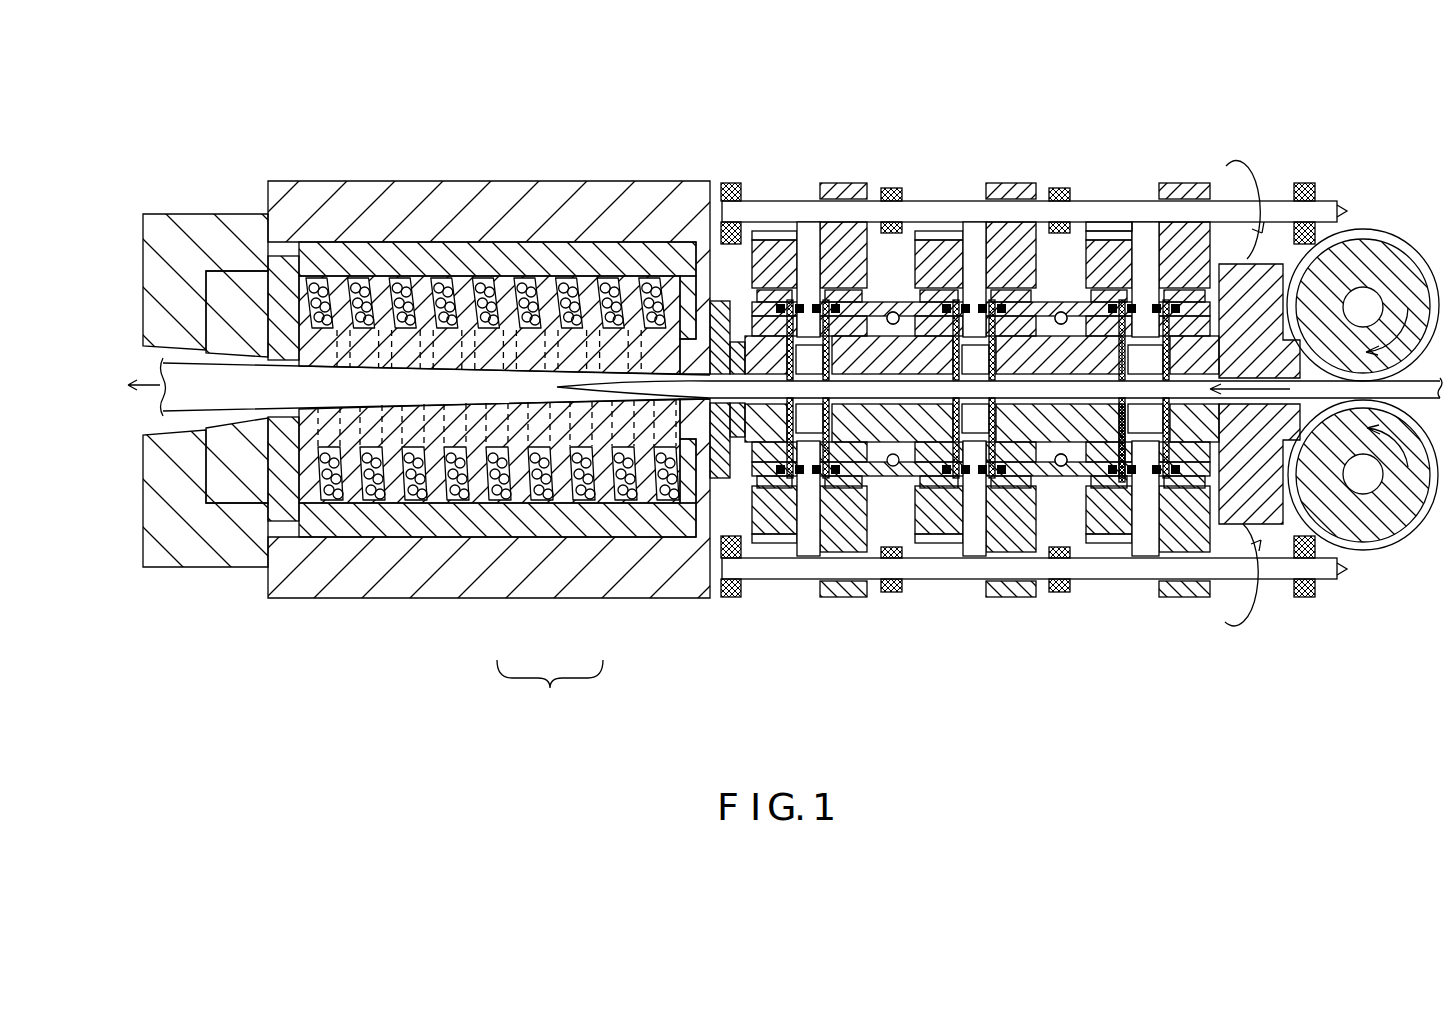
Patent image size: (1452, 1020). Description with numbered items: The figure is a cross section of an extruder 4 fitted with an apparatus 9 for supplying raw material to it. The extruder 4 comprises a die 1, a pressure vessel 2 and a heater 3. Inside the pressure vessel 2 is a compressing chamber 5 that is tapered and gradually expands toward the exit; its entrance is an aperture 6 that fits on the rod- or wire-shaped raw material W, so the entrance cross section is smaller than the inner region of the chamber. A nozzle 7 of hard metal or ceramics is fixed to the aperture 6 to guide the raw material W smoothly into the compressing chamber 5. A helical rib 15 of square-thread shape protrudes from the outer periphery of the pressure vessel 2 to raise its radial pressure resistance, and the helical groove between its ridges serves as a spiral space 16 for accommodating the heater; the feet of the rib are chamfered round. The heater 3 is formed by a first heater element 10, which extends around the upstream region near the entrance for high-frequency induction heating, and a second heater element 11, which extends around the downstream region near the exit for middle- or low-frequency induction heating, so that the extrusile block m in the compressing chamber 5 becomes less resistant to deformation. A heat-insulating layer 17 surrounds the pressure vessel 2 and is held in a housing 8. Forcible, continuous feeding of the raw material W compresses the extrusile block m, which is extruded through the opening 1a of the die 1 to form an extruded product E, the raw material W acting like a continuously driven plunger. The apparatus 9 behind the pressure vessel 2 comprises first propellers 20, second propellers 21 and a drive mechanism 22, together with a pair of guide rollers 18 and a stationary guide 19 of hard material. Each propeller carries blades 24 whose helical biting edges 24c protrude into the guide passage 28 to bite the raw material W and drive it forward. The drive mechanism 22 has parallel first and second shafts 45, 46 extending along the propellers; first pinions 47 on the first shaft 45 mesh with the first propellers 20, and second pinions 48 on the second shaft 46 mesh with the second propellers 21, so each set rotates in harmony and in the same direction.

The die 1 is at (252, 285).
The opening 1a is at (245, 405).
The pressure vessel 2 is at (489, 422).
The heater 3 is at (550, 696).
The extruder 4 is at (489, 416).
The compressing chamber 5 is at (489, 391).
The aperture 6 is at (688, 290).
The nozzle 7 is at (722, 480).
The housing 8 is at (447, 210).
The apparatus 9 is at (919, 175).
The first heater element 10 is at (625, 500).
The second heater element 11 is at (480, 500).
The helical rib 15 is at (548, 330).
The spiral space 16 is at (498, 558).
The heat-insulating layer 17 is at (345, 250).
The guide rollers 18 is at (1378, 530).
The stationary guide 19 is at (1265, 522).
The first propellers 20 is at (838, 262).
The second propellers 21 is at (778, 527).
The drive mechanism 22 is at (1195, 440).
The blades 24 is at (1121, 380).
The helical biting edge 24c is at (1170, 383).
The guide passage 28 is at (975, 380).
The first shaft 45 is at (1130, 222).
The second shaft 46 is at (1010, 572).
The first pinions 47 is at (1245, 178).
The second pinions 48 is at (1132, 440).
The extruded product E is at (188, 403).
The raw material W is at (1438, 340).
The extrusile block m is at (432, 388).